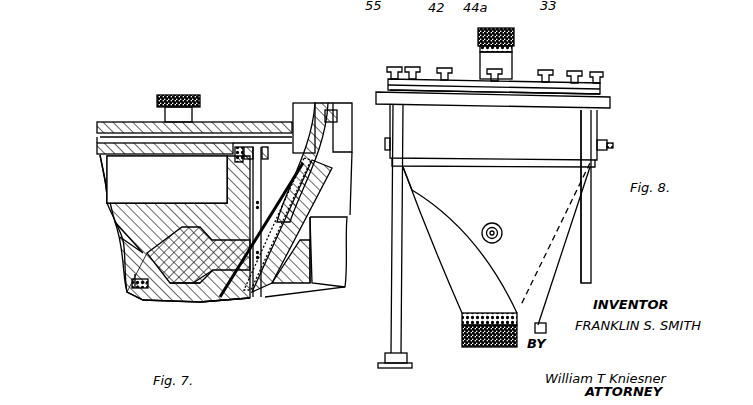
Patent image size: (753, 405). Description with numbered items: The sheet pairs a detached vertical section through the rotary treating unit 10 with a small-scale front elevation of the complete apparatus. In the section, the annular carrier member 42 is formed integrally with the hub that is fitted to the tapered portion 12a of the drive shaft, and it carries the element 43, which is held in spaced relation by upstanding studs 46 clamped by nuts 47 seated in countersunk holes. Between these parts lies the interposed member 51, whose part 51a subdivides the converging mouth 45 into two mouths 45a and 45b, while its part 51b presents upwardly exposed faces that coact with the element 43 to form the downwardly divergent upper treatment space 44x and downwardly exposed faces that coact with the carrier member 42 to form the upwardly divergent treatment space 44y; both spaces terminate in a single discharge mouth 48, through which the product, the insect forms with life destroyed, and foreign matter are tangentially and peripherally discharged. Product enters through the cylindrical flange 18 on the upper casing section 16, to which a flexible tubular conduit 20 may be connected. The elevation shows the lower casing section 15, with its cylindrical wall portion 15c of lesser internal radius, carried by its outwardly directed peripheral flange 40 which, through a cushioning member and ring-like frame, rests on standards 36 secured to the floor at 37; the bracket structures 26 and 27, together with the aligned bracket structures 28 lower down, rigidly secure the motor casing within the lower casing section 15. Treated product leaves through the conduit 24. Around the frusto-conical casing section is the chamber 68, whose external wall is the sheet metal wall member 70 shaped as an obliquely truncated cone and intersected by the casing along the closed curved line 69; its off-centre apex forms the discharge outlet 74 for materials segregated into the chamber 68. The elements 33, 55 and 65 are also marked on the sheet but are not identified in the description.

In FIG. 7, the rotary treating unit 10 is at (100, 220).
In FIG. 7, the tapered portion of shaft 12a is at (340, 146).
In FIG. 8, the lower casing section 15 is at (447, 301).
In FIG. 8, the cylindrical wall portion 15c is at (600, 131).
In FIG. 8, the upper casing section 16 is at (458, 73).
In FIG. 7, the cylindrical flange 18 is at (303, 112).
In FIG. 8, the cylindrical flange 18 is at (505, 60).
In FIG. 8, the tubular conduit 20 is at (516, 36).
In FIG. 8, the conduit 24 is at (472, 347).
In FIG. 7, the bracket structure 26 is at (305, 160).
In FIG. 8, the bracket structure 27 is at (613, 150).
In FIG. 8, the bracket structures 28 is at (503, 234).
In FIG. 7, the housing 33 is at (268, 292).
In FIG. 8, the standards 36 is at (612, 105).
In FIG. 8, the floor securing point 37 is at (408, 358).
In FIG. 8, the peripheral flange 40 is at (604, 83).
In FIG. 7, the annular carrier member 42 is at (222, 294).
In FIG. 7, the element 43 is at (167, 201).
In FIG. 7, the upper treatment space 44x is at (127, 238).
In FIG. 7, the treatment space 44y is at (173, 293).
In FIG. 7, the mouth 45 is at (298, 158).
In FIG. 7, the mouth 45a is at (263, 181).
In FIG. 7, the mouth 45b is at (293, 190).
In FIG. 7, the studs 46 is at (252, 175).
In FIG. 7, the nuts 47 is at (247, 147).
In FIG. 7, the discharge mouth 48 is at (151, 261).
In FIG. 7, the interposed member 51 is at (140, 267).
In FIG. 7, the subdividing part 51a is at (290, 181).
In FIG. 7, the faced part 51b is at (200, 291).
In FIG. 7, the screw 55 is at (131, 293).
In FIG. 8, the bolts 65 is at (592, 72).
In FIG. 8, the chamber 68 is at (578, 217).
In FIG. 8, the closed curved line 69 is at (470, 236).
In FIG. 8, the sheet metal wall member 70 is at (590, 245).
In FIG. 8, the discharge outlet 74 is at (553, 325).